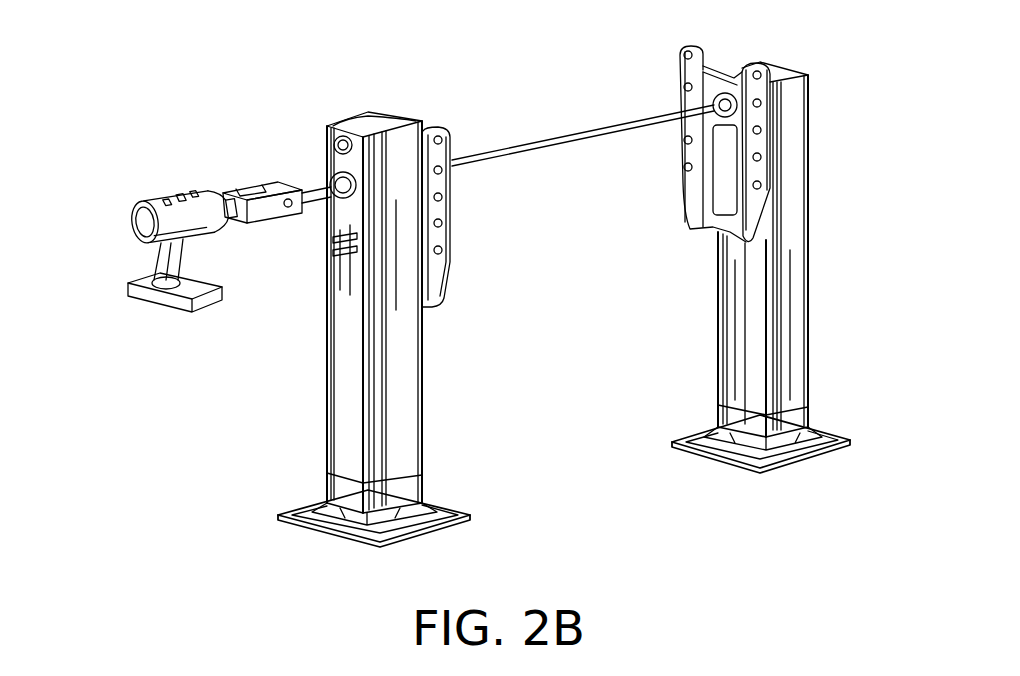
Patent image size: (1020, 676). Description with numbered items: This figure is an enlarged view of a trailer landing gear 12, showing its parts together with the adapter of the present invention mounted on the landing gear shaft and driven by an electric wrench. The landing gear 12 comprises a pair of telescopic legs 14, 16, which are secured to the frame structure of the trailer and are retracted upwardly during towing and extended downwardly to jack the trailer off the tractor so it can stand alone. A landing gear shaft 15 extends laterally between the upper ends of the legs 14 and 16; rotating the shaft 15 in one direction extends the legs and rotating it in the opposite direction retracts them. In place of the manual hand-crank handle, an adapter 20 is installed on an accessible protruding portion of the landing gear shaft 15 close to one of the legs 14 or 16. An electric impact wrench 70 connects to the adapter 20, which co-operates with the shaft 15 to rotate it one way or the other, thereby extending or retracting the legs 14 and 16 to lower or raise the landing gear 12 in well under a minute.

The landing gear 12 is at (453, 477).
The telescopic leg 14 is at (343, 390).
The landing gear shaft 15 is at (303, 162).
The telescopic leg 16 is at (803, 242).
The adapter 20 is at (275, 213).
The electric impact wrench 70 is at (192, 188).